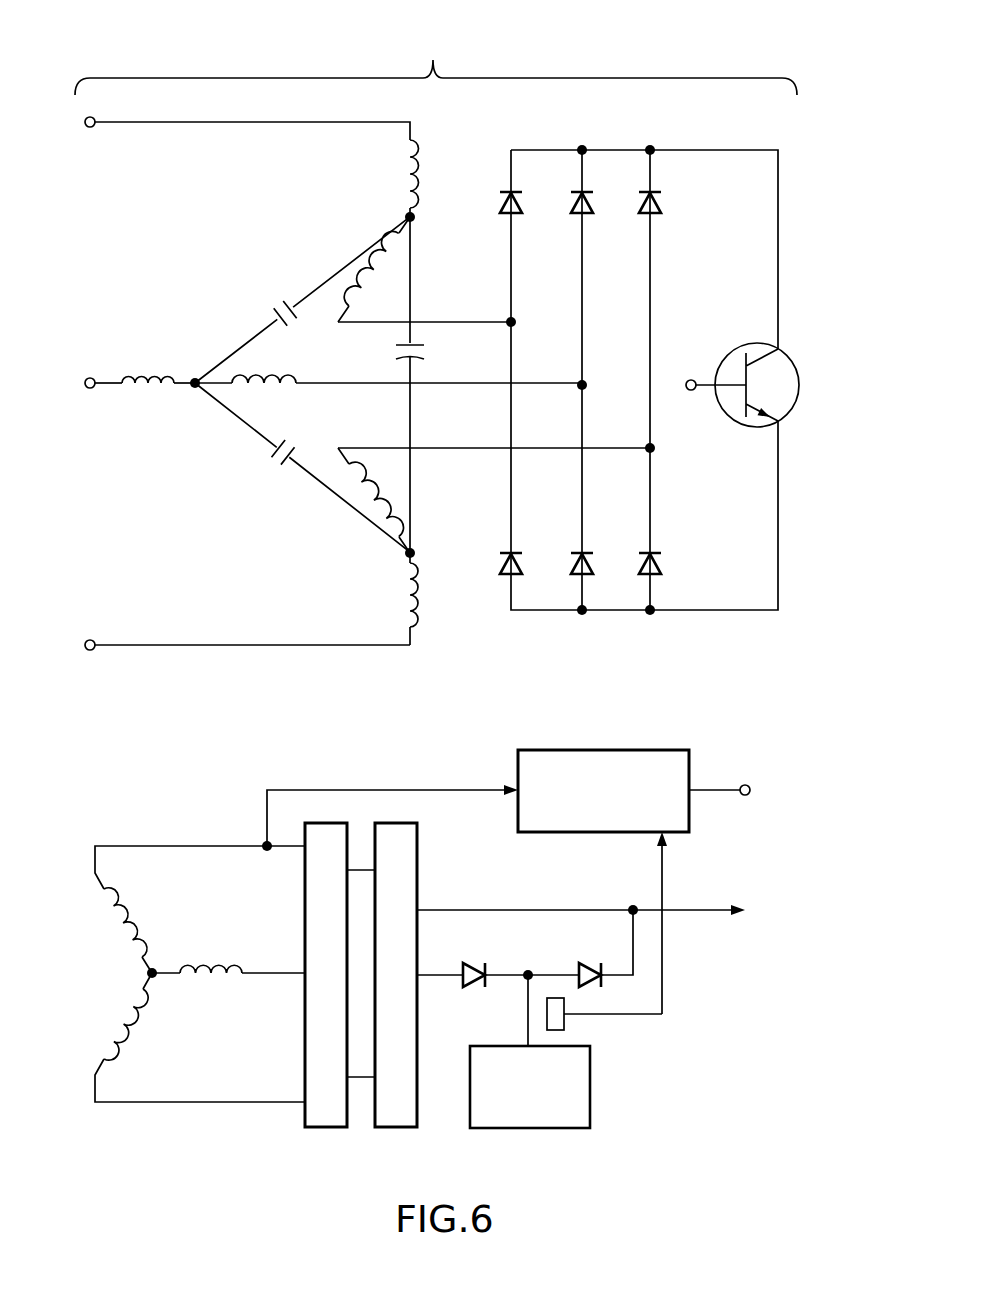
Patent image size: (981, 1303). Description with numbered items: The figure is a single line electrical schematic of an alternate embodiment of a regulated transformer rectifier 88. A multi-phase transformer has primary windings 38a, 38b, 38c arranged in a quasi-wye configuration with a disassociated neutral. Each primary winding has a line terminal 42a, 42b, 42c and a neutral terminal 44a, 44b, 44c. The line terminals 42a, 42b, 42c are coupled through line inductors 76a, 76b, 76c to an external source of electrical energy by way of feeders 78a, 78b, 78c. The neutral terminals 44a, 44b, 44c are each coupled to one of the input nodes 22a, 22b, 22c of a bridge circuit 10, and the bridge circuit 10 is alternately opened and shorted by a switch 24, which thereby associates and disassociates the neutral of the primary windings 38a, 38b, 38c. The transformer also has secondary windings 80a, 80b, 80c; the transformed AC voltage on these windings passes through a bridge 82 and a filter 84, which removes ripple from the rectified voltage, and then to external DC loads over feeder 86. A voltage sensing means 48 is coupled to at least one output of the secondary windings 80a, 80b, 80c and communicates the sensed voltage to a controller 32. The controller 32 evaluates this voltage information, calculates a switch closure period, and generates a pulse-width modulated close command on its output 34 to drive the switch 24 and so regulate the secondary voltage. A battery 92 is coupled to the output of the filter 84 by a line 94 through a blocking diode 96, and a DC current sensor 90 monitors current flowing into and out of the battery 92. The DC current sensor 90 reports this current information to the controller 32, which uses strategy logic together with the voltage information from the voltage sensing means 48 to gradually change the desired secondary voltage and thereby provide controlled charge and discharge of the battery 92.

The bridge circuit 10 is at (600, 123).
The input node 22a is at (518, 323).
The input node 22b is at (590, 385).
The input node 22c is at (658, 448).
The switch 24 is at (808, 345).
The controller 32 is at (602, 750).
The output 34 is at (715, 790).
The primary winding 38a is at (362, 271).
The primary winding 38b is at (263, 340).
The primary winding 38c is at (388, 487).
The line terminal 42a is at (418, 215).
The line terminal 42b is at (192, 387).
The line terminal 42c is at (418, 551).
The neutral terminal 44a is at (423, 322).
The neutral terminal 44b is at (442, 384).
The neutral terminal 44c is at (432, 448).
The voltage sensing means 48 is at (448, 790).
The line inductor 76a is at (417, 165).
The line inductor 76b is at (167, 374).
The line inductor 76c is at (420, 620).
The feeder 78a is at (137, 123).
The feeder 78b is at (100, 388).
The feeder 78c is at (145, 645).
The secondary winding 80a is at (210, 968).
The secondary winding 80b is at (133, 927).
The secondary winding 80c is at (137, 1018).
The bridge 82 is at (305, 1072).
The filter 84 is at (420, 890).
The feeder 86 is at (568, 910).
The regulated transformer rectifier 88 is at (436, 63).
The DC current sensor 90 is at (567, 1022).
The battery 92 is at (590, 1108).
The line 94 is at (543, 975).
The blocking diode 96 is at (485, 968).